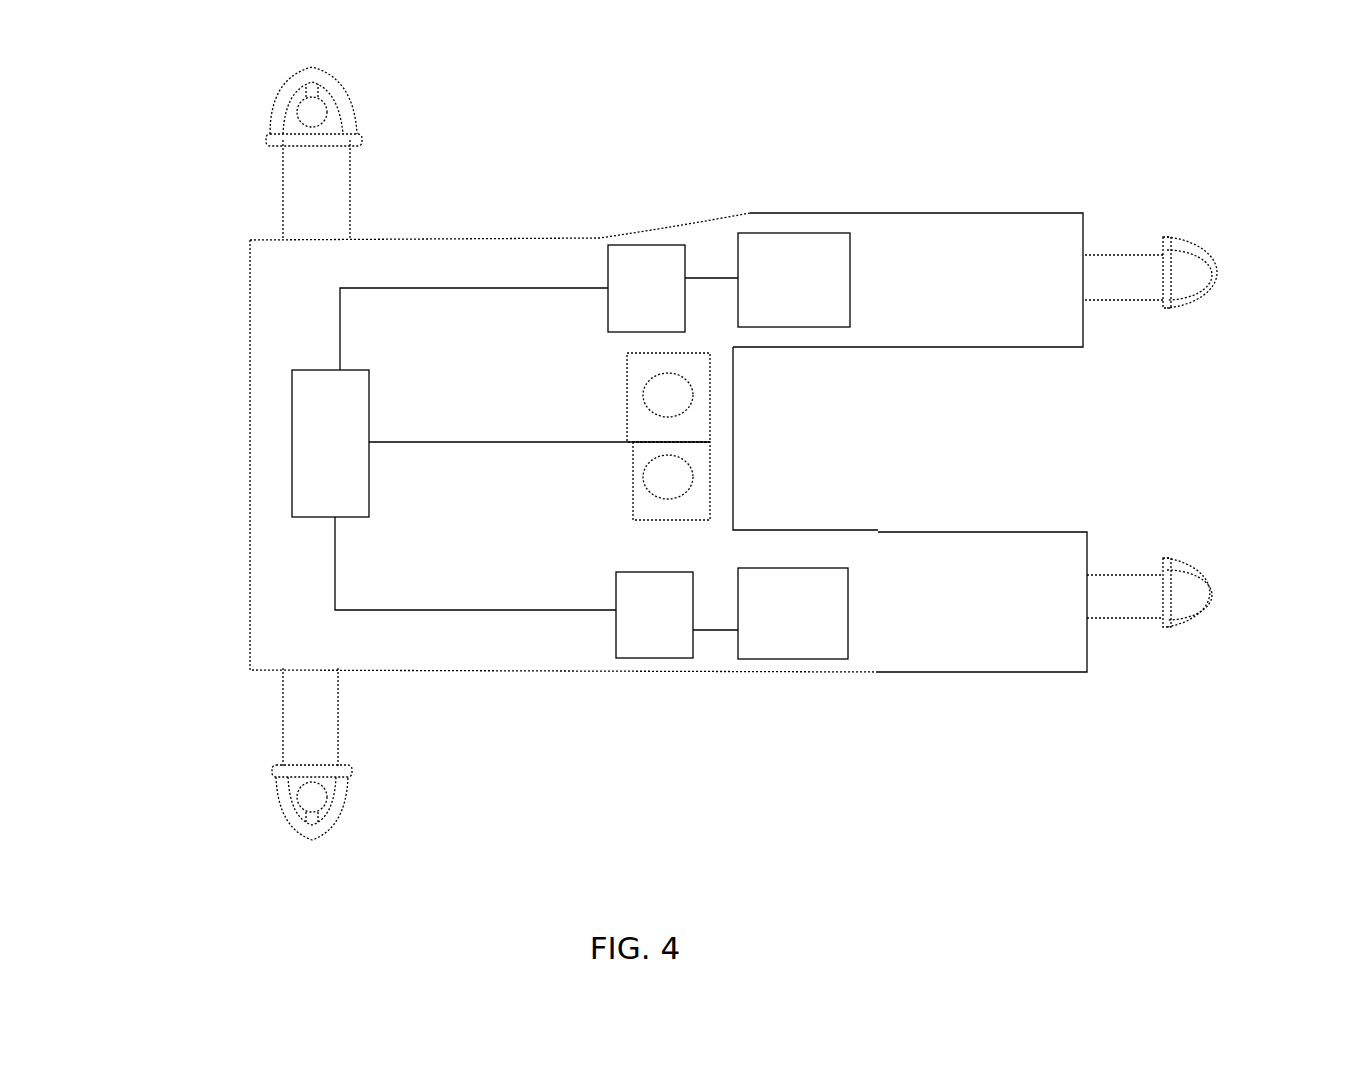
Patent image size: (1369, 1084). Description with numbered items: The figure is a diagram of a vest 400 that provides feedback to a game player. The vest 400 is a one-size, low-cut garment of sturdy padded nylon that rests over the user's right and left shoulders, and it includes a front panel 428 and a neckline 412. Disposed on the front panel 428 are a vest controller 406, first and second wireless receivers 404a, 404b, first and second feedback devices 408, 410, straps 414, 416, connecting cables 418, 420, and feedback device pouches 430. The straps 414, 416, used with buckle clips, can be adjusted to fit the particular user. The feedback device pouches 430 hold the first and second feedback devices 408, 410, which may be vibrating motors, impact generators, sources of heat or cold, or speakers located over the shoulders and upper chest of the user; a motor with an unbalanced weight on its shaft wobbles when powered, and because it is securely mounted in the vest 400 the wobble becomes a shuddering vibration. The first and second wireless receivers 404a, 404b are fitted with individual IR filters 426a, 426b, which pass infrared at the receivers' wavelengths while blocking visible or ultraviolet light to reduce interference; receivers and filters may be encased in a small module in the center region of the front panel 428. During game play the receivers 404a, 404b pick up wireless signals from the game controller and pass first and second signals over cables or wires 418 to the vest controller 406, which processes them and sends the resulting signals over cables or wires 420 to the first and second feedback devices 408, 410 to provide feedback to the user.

The vest 400 is at (92, 103).
The first wireless receiver 404a is at (668, 397).
The second wireless receiver 404b is at (668, 477).
The vest controller 406 is at (333, 468).
The first feedback device 408 is at (790, 275).
The second feedback device 410 is at (782, 630).
The neckline 412 is at (740, 452).
The strap 414 is at (1208, 277).
The strap 416 is at (358, 113).
The cables or wires 418 is at (462, 440).
The cables or wires 420 is at (717, 628).
The IR filter 426a is at (640, 372).
The IR filter 426b is at (652, 505).
The front panel 428 is at (283, 602).
The feedback device pouches 430 is at (670, 240).